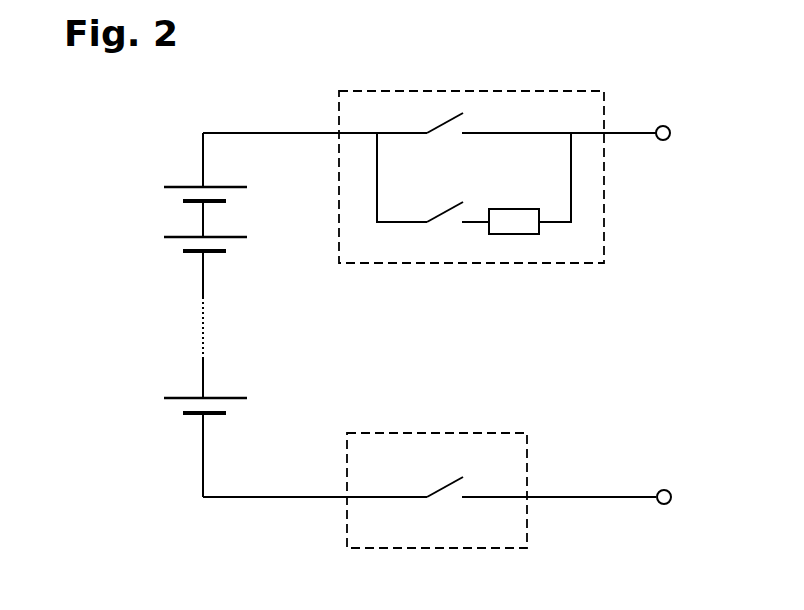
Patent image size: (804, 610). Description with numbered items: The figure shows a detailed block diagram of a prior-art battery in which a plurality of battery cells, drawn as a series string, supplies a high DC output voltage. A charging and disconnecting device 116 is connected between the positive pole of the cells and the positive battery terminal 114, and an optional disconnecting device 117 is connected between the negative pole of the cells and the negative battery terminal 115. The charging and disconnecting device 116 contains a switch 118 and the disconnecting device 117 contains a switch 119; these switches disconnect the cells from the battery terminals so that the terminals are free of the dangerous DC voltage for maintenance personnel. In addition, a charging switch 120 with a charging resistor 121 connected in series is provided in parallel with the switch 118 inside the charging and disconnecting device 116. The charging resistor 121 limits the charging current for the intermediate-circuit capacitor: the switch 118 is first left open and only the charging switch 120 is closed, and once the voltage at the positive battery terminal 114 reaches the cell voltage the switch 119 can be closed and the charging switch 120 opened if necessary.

The positive battery terminal 114 is at (664, 125).
The negative battery terminal 115 is at (664, 489).
The charging and disconnecting device 116 is at (518, 90).
The disconnecting device 117 is at (483, 432).
The switch 118 is at (443, 125).
The switch 119 is at (441, 490).
The charging switch 120 is at (443, 196).
The charging resistor 121 is at (514, 209).